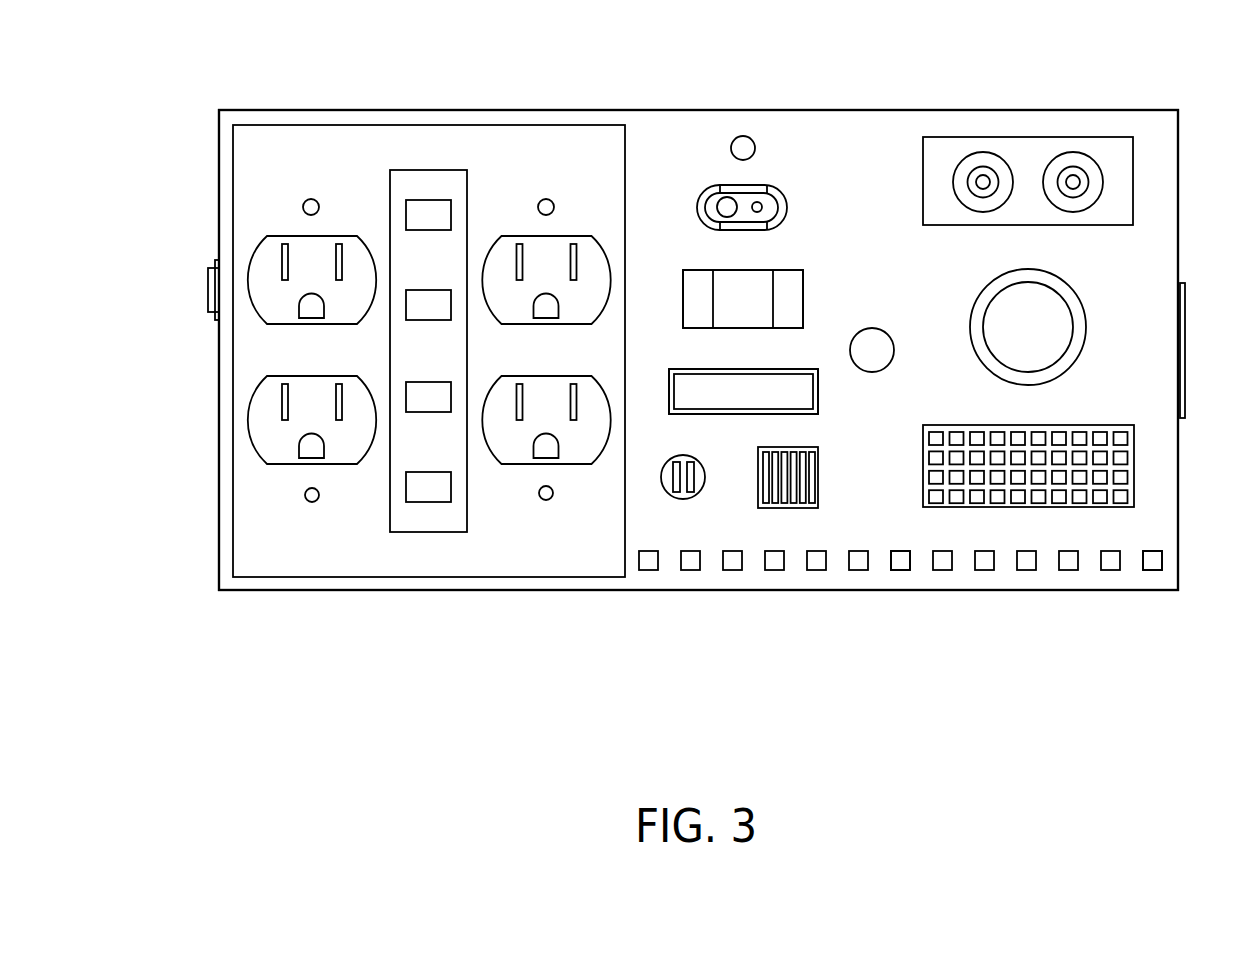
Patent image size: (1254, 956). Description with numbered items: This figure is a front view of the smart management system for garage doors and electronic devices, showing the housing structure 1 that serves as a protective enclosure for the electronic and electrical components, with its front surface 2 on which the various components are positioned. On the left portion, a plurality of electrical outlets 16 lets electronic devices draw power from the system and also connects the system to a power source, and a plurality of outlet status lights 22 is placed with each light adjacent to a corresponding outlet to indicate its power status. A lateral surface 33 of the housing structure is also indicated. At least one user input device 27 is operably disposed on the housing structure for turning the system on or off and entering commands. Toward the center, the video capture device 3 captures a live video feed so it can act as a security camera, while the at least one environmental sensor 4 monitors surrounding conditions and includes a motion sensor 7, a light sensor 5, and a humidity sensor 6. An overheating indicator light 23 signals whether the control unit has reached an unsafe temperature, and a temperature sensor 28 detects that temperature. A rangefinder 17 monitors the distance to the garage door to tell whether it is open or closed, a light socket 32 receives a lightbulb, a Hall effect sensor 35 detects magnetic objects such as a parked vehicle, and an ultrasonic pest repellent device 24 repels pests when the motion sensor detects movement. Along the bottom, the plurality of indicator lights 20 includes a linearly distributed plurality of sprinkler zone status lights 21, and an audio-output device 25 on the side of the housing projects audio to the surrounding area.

The housing structure 1 is at (200, 547).
The front surface 2 is at (1160, 126).
The video capture device 3 is at (787, 207).
The environmental sensor 4 is at (653, 323).
The light sensor 5 is at (818, 388).
The humidity sensor 6 is at (818, 473).
The motion sensor 7 is at (803, 293).
The electrical outlets 16 is at (362, 465).
The rangefinder 17 is at (923, 173).
The indicator lights 20 is at (773, 580).
The sprinkler zone status lights 21 is at (893, 551).
The outlet status lights 22 is at (305, 495).
The overheating indicator light 23 is at (755, 146).
The ultrasonic pest repellent device 24 is at (937, 425).
The audio-output device 25 is at (1185, 330).
The user input device 27 is at (208, 283).
The temperature sensor 28 is at (677, 455).
The light socket 32 is at (1064, 319).
The lateral surface 33 is at (431, 105).
The Hall effect sensor 35 is at (877, 331).